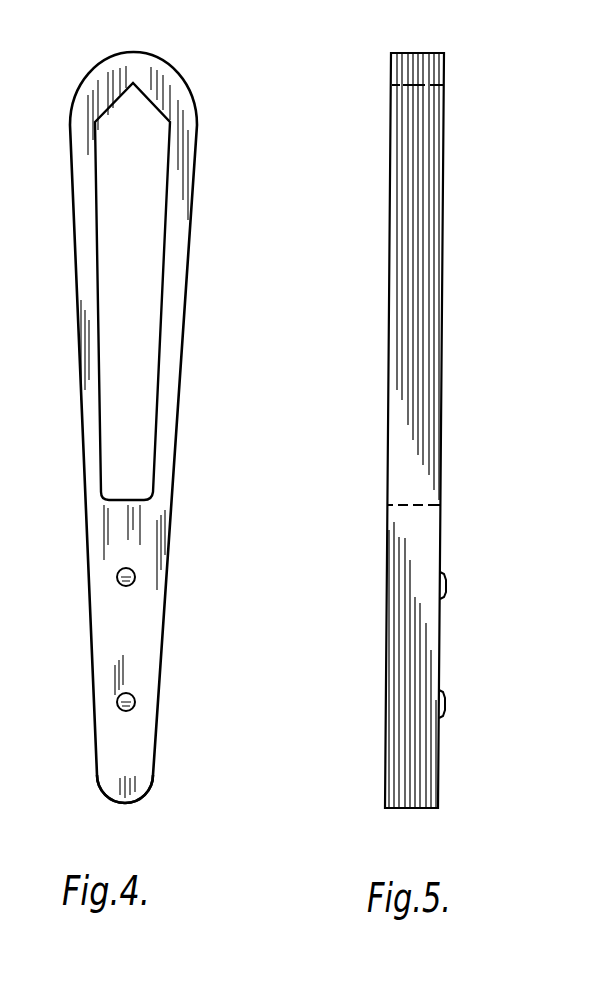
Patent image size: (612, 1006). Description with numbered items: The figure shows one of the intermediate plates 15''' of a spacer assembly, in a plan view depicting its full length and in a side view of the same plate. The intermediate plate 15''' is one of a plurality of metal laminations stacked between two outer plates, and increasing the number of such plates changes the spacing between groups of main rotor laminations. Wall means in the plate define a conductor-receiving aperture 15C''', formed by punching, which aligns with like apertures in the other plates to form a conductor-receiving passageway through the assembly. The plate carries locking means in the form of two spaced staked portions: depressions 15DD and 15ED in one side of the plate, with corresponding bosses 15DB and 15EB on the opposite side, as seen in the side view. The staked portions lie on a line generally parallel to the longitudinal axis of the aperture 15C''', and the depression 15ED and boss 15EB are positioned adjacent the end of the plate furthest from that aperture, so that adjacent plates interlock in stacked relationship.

In FIG. 4, the intermediate plate 15''' is at (170, 648).
In FIG. 5, the intermediate plate 15''' is at (455, 430).
In FIG. 4, the conductor-receiving aperture 15C''' is at (179, 291).
In FIG. 4, the depression 15DD is at (133, 585).
In FIG. 4, the depression 15ED is at (132, 710).
In FIG. 5, the boss 15DB is at (443, 600).
In FIG. 5, the boss 15EB is at (442, 718).